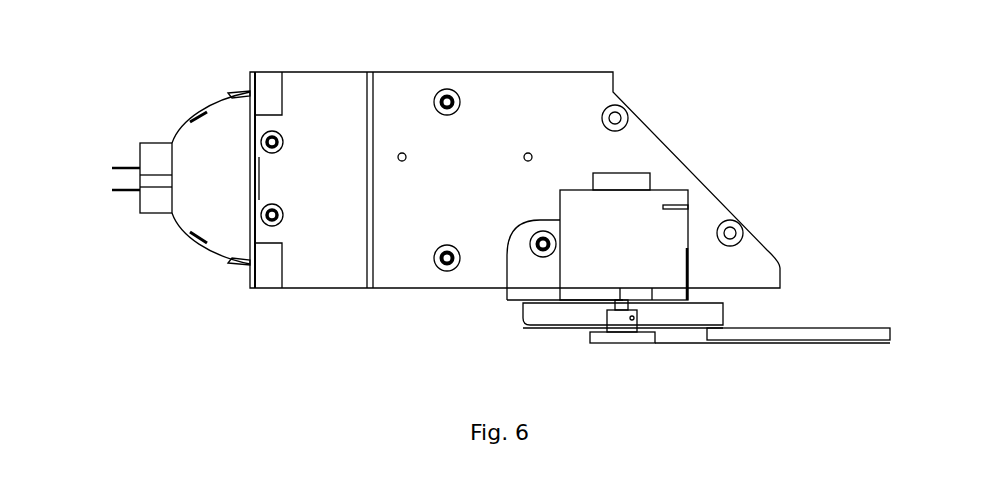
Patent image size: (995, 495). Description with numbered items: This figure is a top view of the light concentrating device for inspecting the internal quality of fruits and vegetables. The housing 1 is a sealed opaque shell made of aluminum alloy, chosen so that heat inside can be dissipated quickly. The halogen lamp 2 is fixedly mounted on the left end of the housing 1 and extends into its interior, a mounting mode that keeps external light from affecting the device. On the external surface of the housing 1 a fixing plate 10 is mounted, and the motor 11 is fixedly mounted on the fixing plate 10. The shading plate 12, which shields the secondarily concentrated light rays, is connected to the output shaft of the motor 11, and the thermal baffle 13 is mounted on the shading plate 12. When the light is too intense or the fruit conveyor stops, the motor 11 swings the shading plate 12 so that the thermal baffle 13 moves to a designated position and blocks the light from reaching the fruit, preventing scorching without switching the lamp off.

The housing 1 is at (352, 83).
The halogen lamp 2 is at (185, 137).
The fixing plate 10 is at (528, 275).
The motor 11 is at (645, 222).
The shading plate 12 is at (702, 342).
The thermal baffle 13 is at (770, 337).